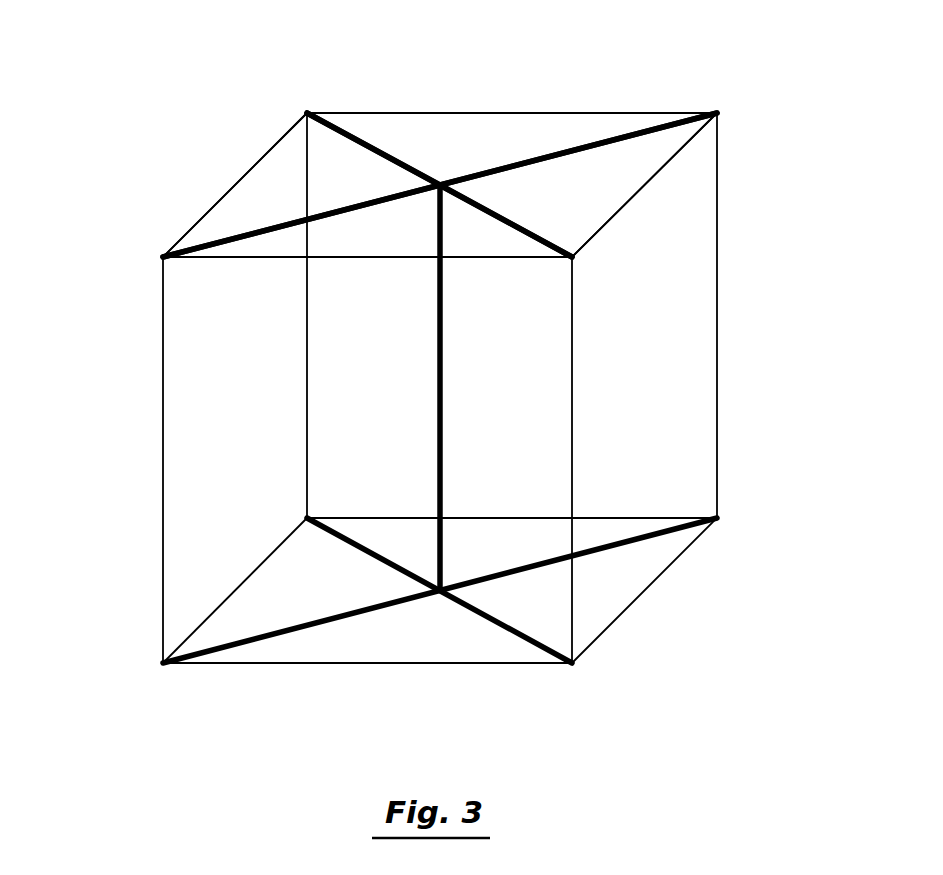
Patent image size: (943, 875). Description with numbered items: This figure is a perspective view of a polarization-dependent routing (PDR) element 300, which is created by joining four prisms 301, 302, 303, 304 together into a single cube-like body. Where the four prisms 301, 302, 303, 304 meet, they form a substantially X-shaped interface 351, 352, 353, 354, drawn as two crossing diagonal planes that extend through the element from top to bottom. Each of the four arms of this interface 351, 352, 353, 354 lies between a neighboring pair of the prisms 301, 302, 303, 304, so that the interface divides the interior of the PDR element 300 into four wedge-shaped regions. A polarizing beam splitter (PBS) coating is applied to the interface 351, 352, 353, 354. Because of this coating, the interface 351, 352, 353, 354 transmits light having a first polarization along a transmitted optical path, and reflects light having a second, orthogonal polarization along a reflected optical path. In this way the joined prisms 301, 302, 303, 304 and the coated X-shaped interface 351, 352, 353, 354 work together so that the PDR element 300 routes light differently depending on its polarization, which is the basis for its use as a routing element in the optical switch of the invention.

The polarization-dependent routing (PDR) element 300 is at (197, 135).
The prism 301 is at (285, 177).
The prism 302 is at (470, 142).
The prism 303 is at (585, 183).
The prism 304 is at (365, 235).
The interface 351 is at (375, 147).
The interface 352 is at (565, 148).
The interface 353 is at (505, 216).
The interface 354 is at (275, 222).